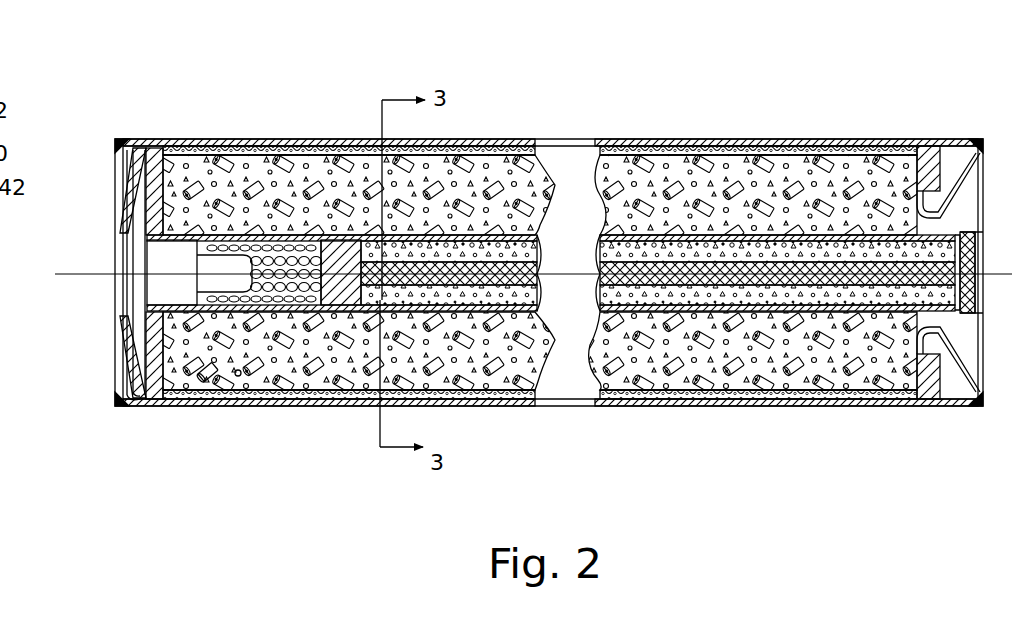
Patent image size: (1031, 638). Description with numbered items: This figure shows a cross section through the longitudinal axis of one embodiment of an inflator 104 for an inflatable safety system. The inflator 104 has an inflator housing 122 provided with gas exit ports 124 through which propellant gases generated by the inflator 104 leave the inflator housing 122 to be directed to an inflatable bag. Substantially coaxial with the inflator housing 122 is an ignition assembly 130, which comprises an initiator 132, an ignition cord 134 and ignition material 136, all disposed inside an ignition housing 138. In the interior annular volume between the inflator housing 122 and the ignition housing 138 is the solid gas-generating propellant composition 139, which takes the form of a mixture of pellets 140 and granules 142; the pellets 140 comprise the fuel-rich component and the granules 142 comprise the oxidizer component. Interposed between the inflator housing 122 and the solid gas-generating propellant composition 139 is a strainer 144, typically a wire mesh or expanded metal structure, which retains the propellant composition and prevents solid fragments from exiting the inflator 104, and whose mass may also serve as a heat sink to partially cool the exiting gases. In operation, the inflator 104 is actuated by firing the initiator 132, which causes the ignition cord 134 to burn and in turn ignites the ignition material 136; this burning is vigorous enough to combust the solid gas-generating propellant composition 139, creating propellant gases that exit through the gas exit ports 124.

The inflator 104 is at (243, 118).
The inflator housing 122 is at (458, 139).
The gas exit ports 124 is at (320, 136).
The ignition assembly 130 is at (98, 303).
The initiator 132 is at (160, 259).
The ignition cord 134 is at (813, 290).
The ignition material 136 is at (777, 300).
The ignition housing 138 is at (750, 247).
The solid gas-generating propellant composition 139 is at (357, 372).
The pellets 140 is at (210, 382).
The granules 142 is at (238, 378).
The strainer 144 is at (515, 406).